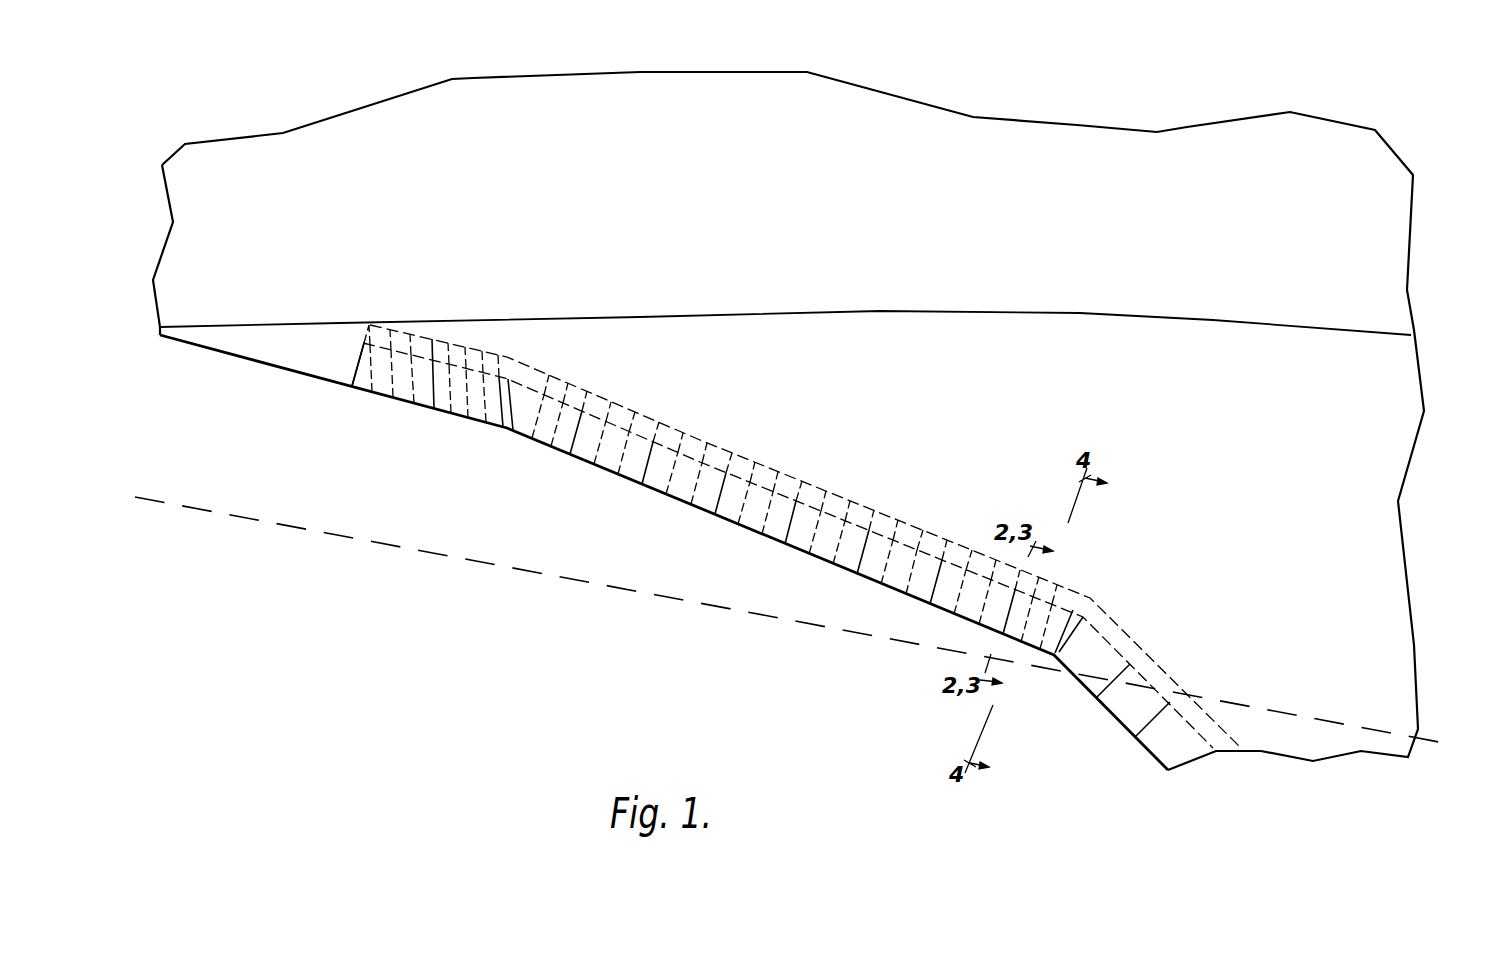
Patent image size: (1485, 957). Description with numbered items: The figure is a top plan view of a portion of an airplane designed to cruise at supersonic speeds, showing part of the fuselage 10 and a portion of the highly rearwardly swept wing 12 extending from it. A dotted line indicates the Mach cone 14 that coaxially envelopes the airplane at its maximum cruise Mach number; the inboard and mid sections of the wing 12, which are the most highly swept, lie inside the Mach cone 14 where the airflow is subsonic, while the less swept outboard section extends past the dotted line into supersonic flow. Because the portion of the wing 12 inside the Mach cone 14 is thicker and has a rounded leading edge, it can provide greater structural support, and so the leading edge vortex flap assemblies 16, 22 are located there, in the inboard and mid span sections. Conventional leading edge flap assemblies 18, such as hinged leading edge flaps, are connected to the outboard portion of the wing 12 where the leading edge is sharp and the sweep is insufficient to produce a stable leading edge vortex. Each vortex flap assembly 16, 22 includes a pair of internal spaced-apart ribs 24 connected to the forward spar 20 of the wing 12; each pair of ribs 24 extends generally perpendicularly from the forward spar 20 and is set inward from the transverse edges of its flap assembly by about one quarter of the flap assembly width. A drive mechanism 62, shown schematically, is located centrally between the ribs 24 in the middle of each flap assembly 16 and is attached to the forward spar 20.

The fuselage 10 is at (1066, 148).
The wing 12 is at (1293, 749).
The Mach cone 14 is at (465, 557).
The leading edge vortex flap assembly 16 is at (543, 443).
The conventional leading edge flap assembly 18 is at (1095, 687).
The forward spar 20 is at (793, 536).
The leading edge vortex flap assembly 22 is at (393, 398).
The internal spaced-apart ribs 24 is at (610, 401).
The drive mechanism 62 is at (630, 411).